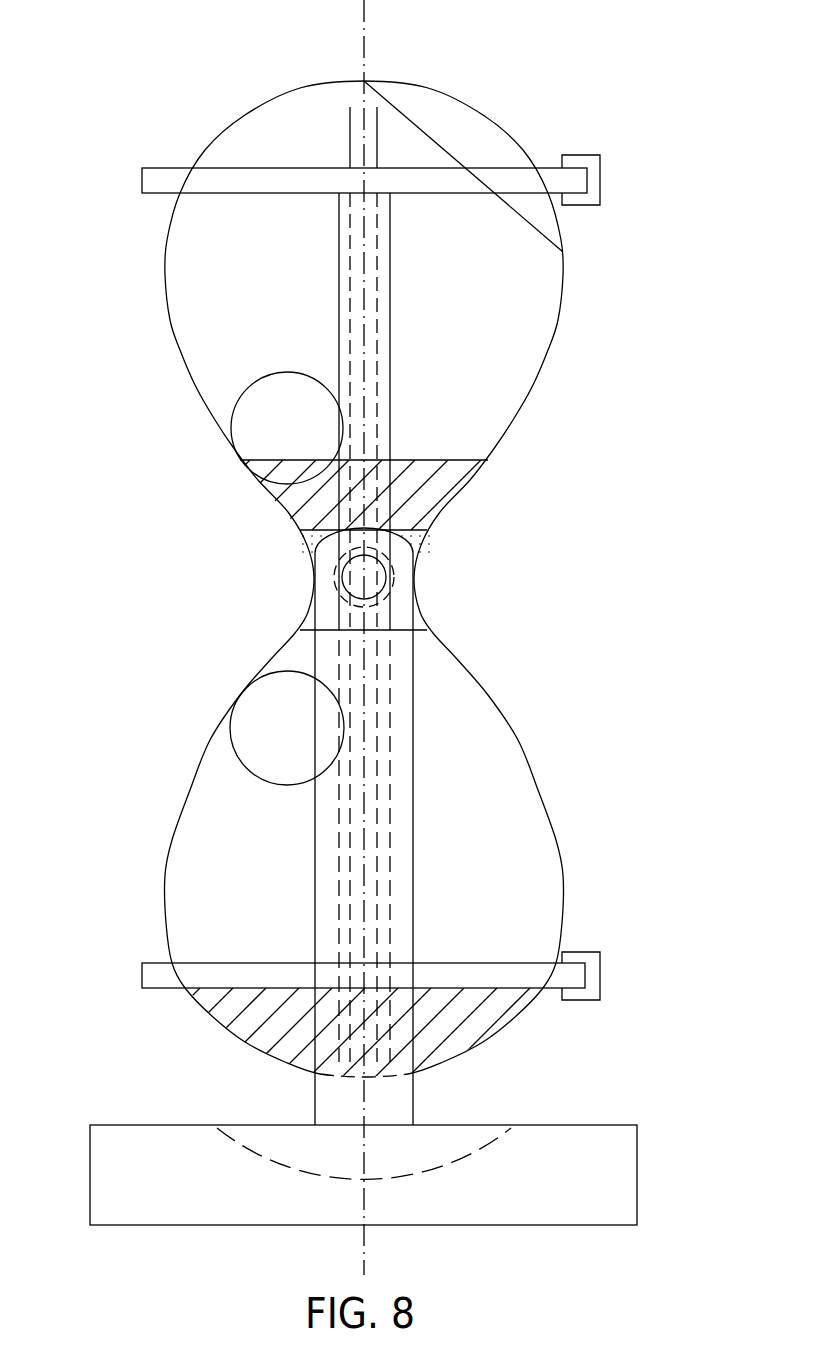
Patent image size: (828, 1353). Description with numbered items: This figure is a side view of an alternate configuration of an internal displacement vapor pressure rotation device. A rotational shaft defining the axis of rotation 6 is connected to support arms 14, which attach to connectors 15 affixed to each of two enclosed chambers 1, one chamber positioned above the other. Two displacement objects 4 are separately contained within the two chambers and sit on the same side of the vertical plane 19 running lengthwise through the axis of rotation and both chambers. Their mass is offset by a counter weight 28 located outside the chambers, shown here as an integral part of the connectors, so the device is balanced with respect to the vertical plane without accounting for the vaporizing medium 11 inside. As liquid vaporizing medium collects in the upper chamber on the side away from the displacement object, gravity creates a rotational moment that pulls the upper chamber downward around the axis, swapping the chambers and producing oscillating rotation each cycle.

The enclosed chamber 1 is at (512, 430).
The displacement object 4 is at (238, 395).
The axis of rotation 6 is at (343, 578).
The vaporizing medium 11 is at (313, 505).
The support arm 14 is at (390, 267).
The connector 15 is at (215, 180).
The vertical plane 19 is at (363, 43).
The counter weight 28 is at (600, 193).